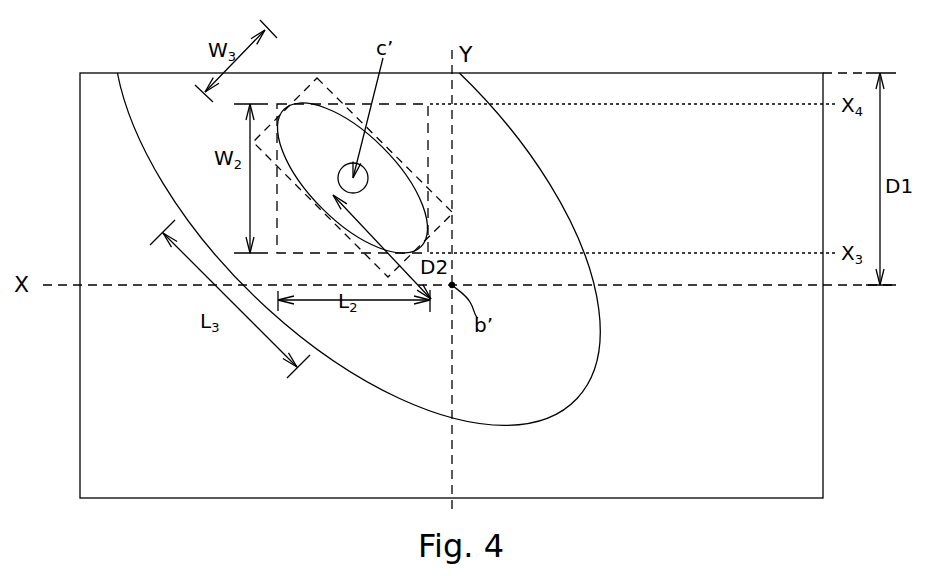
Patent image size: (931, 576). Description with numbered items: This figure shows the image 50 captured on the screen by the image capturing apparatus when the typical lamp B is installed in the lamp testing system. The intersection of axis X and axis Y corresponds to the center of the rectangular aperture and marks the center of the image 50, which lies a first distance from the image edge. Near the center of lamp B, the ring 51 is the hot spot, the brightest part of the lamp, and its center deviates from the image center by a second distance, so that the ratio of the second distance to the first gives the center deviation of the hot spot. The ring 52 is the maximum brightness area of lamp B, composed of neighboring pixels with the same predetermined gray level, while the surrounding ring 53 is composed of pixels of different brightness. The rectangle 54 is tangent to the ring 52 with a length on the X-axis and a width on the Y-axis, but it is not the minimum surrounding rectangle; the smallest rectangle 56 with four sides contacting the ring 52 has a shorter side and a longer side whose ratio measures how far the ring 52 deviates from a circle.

The image 50 is at (757, 73).
The ring 51 is at (361, 170).
The ring 52 is at (428, 232).
The ring 53 is at (568, 222).
The rectangle 54 is at (428, 176).
The rectangle 56 is at (327, 90).